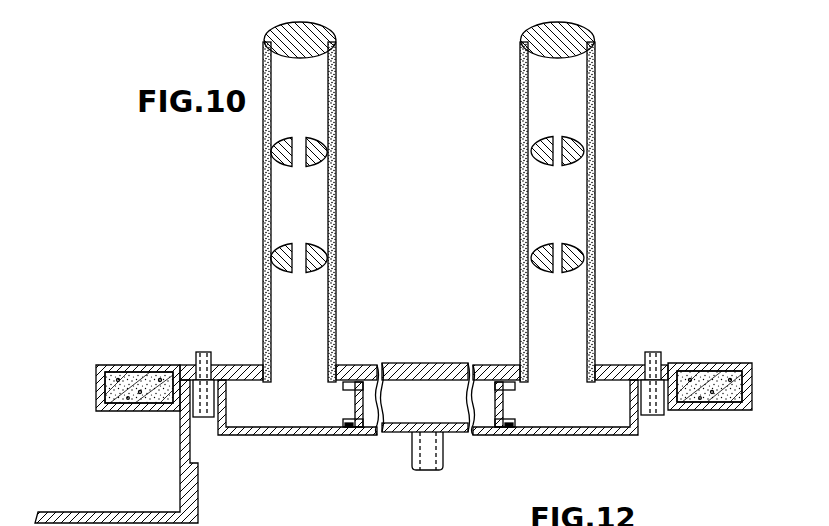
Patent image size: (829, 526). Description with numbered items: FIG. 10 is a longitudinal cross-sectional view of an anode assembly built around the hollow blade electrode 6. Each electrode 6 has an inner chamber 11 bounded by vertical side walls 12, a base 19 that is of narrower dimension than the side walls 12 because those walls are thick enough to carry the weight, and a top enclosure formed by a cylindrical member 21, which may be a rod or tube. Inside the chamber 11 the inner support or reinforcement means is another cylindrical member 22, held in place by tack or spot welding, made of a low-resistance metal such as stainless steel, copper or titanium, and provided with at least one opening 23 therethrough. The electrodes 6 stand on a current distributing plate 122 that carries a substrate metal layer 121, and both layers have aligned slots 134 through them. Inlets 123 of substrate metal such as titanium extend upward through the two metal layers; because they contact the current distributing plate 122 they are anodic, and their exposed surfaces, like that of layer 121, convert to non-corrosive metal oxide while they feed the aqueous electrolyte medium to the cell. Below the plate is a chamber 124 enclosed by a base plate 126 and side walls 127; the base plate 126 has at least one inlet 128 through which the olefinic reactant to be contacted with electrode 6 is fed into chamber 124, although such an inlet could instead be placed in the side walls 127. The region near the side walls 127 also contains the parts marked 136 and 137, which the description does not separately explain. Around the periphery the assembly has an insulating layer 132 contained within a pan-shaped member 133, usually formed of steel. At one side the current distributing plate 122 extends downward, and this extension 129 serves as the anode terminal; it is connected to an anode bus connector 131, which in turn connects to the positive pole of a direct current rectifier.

The electrode 6 is at (418, 202).
The inner chamber 11 is at (308, 213).
The vertical side walls 12 is at (263, 72).
The base 19 is at (268, 383).
The cylindrical member 21 is at (285, 36).
The cylindrical member 22 is at (278, 146).
The opening 23 is at (297, 140).
The substrate metal layer 121 is at (427, 403).
The current distributing plate 122 is at (422, 381).
The inlets 123 is at (197, 355).
The chamber 124 is at (424, 416).
The base plate 126 is at (400, 433).
The side walls 127 is at (226, 410).
The inlet 128 is at (444, 452).
The extension 129 is at (181, 452).
The anode bus connector 131 is at (107, 513).
The peripheral insulating layer 132 is at (136, 367).
The pan-shaped member 133 is at (420, 370).
The aligned slots 134 is at (425, 401).
The tray bottom 136 is at (352, 430).
The bracket 137 is at (355, 398).